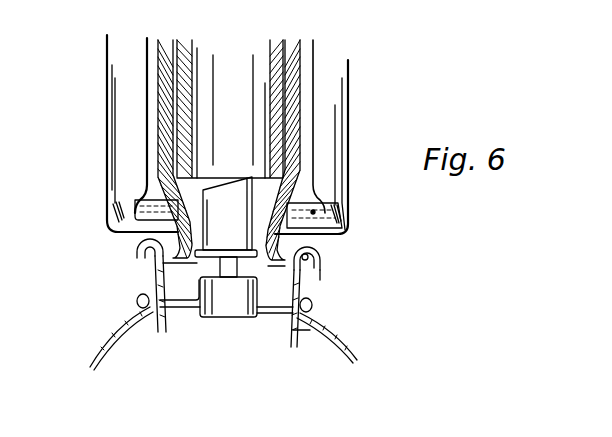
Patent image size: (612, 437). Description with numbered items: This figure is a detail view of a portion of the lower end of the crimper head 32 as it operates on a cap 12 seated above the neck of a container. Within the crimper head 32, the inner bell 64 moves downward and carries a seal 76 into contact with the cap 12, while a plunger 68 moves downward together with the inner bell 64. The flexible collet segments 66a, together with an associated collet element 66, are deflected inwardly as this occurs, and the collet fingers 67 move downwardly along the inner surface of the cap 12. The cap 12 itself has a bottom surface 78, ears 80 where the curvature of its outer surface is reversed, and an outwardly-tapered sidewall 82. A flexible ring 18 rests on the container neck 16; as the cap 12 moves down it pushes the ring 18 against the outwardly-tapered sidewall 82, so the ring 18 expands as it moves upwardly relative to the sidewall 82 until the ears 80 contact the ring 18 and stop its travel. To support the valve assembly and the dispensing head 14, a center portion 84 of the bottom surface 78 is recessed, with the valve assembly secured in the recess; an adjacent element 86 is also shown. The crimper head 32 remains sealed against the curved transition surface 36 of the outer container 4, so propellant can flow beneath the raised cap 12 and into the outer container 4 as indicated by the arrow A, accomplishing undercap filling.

The outer container 4 is at (357, 348).
The cap 12 is at (262, 322).
The dispensing head 14 is at (228, 181).
The container neck 16 is at (337, 290).
The flexible ring 18 is at (140, 265).
The crimper head 32 is at (103, 80).
The curved transition surface 36 is at (340, 332).
The inner bell 64 is at (350, 85).
The cup lip 66 is at (300, 210).
The collet segments 66a is at (147, 188).
The collet fingers 67 is at (285, 247).
The plunger 68 is at (272, 58).
The seal 76 is at (315, 212).
The bottom surface 78 is at (278, 313).
The ears 80 is at (130, 248).
The outwardly-tapered sidewall 82 is at (226, 253).
The center portion 84 is at (190, 292).
The spring leg 86 is at (303, 330).
The arrow A is at (312, 287).